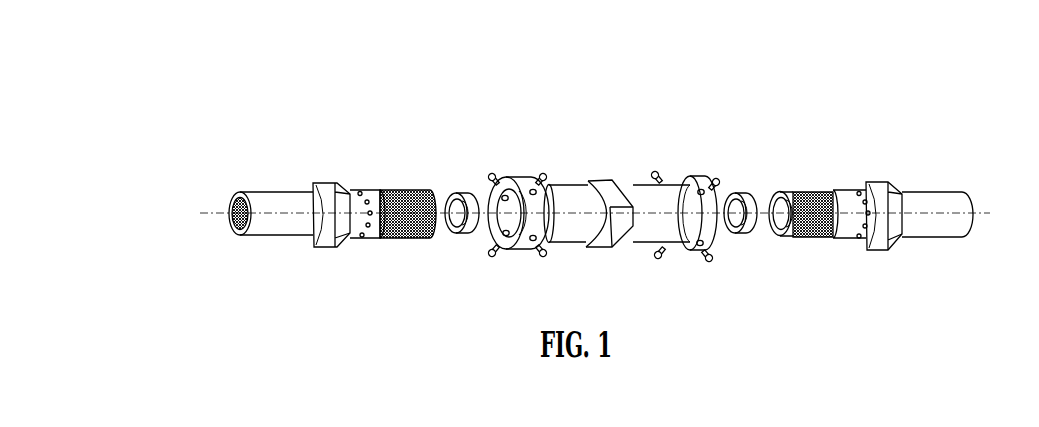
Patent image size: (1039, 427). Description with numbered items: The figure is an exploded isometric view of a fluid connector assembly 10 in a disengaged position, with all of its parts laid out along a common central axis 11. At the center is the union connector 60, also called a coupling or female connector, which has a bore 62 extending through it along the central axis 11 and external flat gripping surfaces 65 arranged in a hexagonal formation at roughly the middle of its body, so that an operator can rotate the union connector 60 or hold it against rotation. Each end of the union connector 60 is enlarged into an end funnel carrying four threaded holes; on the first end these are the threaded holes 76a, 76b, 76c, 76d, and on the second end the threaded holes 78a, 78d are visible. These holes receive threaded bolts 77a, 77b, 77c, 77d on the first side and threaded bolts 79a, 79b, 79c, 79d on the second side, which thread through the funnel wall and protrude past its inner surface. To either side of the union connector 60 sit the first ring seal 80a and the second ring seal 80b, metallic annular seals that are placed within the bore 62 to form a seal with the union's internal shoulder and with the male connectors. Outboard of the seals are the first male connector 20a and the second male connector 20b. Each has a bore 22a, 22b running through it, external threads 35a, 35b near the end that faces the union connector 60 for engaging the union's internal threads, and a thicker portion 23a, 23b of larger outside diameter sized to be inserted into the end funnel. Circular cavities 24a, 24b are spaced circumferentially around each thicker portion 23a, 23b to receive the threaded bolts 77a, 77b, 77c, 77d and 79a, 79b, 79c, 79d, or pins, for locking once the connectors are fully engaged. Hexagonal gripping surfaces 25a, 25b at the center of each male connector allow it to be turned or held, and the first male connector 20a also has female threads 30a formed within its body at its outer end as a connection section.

The fluid connector assembly 10 is at (488, 46).
The central axis 11 is at (209, 212).
The first male connector 20a is at (330, 147).
The second male connector 20b is at (854, 147).
The bore 22a is at (222, 224).
The bore 22b is at (763, 234).
The thicker portion 23a is at (352, 240).
The thicker portion 23b is at (849, 240).
The circular cavities 24a is at (372, 237).
The circular cavities 24b is at (869, 236).
The gripping surfaces 25a is at (320, 182).
The gripping surfaces 25b is at (881, 183).
The female threads 30a is at (233, 198).
The external threads 35a is at (396, 192).
The external threads 35b is at (797, 191).
The union connector 60 is at (630, 194).
The bore 62 is at (487, 238).
The gripping surfaces 65 is at (612, 180).
The threaded hole 76a is at (537, 241).
The threaded hole 76b is at (507, 237).
The threaded hole 76c is at (505, 195).
The threaded hole 76d is at (533, 189).
The threaded bolt 77a is at (550, 260).
The threaded bolt 77b is at (488, 259).
The threaded bolt 77c is at (489, 172).
The threaded bolt 77d is at (546, 172).
The threaded hole 78a is at (700, 246).
The threaded hole 78d is at (701, 189).
The threaded bolt 79a is at (713, 263).
The threaded bolt 79b is at (658, 260).
The threaded bolt 79c is at (652, 170).
The threaded bolt 79d is at (718, 177).
The first ring seal 80a is at (459, 181).
The second ring seal 80b is at (746, 181).